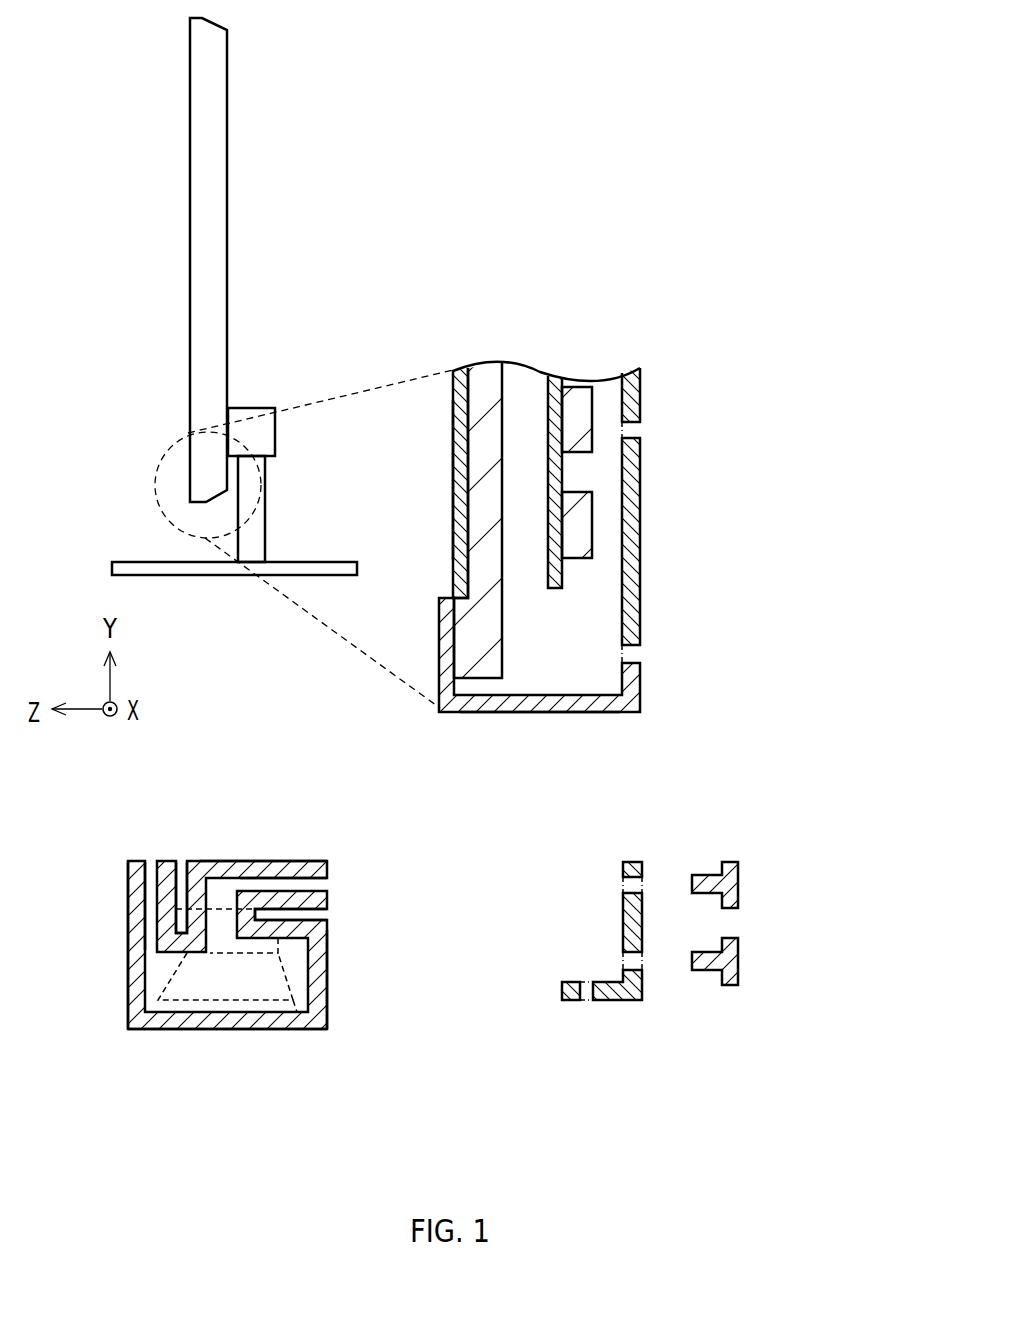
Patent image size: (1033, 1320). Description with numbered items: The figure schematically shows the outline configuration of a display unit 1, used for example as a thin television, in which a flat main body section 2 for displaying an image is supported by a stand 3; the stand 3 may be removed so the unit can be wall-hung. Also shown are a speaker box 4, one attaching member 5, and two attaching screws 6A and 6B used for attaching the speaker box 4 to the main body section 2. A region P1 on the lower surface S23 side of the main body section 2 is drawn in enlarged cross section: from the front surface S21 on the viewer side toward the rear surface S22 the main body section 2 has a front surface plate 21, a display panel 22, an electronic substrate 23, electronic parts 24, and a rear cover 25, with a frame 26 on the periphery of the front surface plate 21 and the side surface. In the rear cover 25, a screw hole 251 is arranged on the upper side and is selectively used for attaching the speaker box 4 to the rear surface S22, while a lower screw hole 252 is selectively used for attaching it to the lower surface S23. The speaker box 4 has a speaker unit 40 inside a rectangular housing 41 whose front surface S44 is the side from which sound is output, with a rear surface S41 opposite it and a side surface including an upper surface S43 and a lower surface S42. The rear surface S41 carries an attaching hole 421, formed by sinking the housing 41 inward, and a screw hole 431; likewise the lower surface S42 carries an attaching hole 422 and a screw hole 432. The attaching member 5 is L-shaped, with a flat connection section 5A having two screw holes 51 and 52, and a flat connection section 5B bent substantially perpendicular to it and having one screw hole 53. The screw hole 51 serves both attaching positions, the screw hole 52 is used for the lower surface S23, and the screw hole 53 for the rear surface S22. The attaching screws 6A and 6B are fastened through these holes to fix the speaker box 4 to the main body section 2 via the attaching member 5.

The display unit 1 is at (530, 87).
The main body section 2 is at (200, 209).
The stand 3 is at (285, 458).
The region P1 is at (157, 485).
The front surface plate 21 is at (457, 573).
The display panel 22 is at (485, 370).
The electronic substrate 23 is at (548, 377).
The electronic parts 24 is at (580, 433).
The rear cover 25 is at (630, 395).
The screw hole 251 is at (637, 432).
The screw hole 252 is at (635, 658).
The frame 26 is at (547, 700).
The front surface S21 is at (447, 468).
The rear surface S22 is at (646, 490).
The lower surface S23 is at (498, 720).
The speaker box 4 is at (223, 1108).
The speaker unit 40 is at (288, 1032).
The housing 41 is at (197, 1027).
The attaching hole 421 is at (183, 857).
The attaching hole 422 is at (327, 914).
The screw hole 431 is at (150, 858).
The screw hole 432 is at (315, 885).
The rear surface S41 is at (290, 845).
The lower surface S42 is at (340, 1018).
The upper surface S43 is at (118, 916).
The front surface S44 is at (155, 1040).
The attaching member 5 is at (612, 1100).
The connection section 5A is at (648, 938).
The connection section 5B is at (607, 1013).
The screw hole 51 is at (618, 885).
The screw hole 52 is at (615, 960).
The screw hole 53 is at (580, 975).
The attaching screw 6A is at (748, 882).
The attaching screw 6B is at (748, 958).